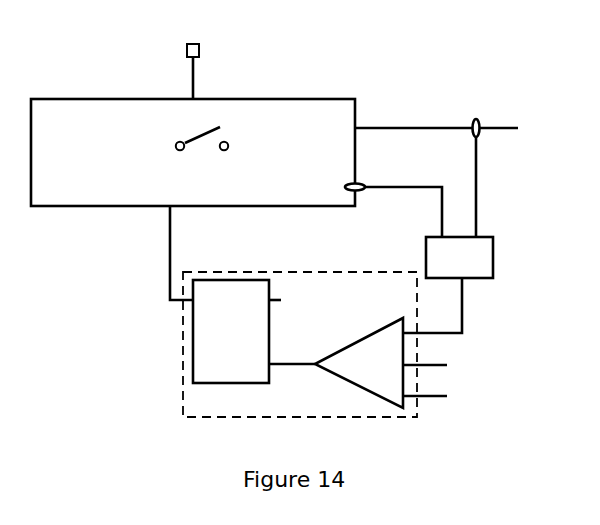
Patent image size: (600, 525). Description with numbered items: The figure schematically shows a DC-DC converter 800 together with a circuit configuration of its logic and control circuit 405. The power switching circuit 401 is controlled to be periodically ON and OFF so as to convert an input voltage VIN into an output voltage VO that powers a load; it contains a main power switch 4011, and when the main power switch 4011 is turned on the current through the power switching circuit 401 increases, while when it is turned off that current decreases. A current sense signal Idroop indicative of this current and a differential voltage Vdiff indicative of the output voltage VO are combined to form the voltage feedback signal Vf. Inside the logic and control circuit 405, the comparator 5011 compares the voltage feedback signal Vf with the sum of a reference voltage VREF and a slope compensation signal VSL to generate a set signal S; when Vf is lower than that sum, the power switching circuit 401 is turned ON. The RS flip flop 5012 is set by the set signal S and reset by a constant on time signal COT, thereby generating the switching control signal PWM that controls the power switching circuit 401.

The DC-DC converter 800 is at (504, 57).
The power switching circuit 401 is at (193, 152).
The main power switch 4011 is at (203, 155).
The logic and control circuit 405 is at (183, 384).
The RS flip flop 5012 is at (260, 331).
The comparator 5011 is at (359, 363).